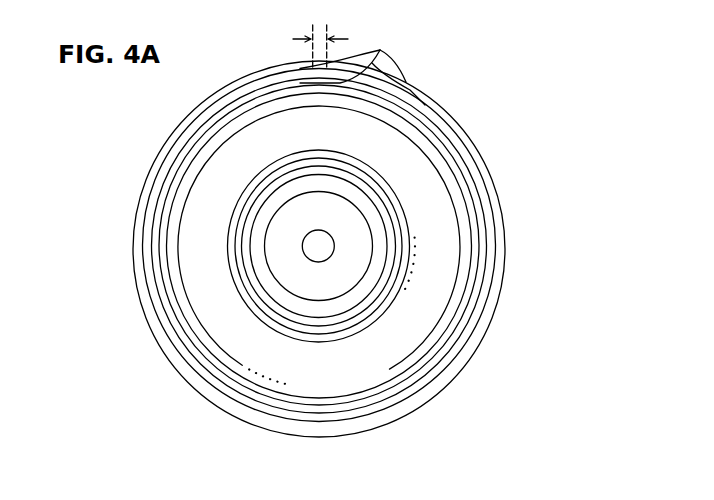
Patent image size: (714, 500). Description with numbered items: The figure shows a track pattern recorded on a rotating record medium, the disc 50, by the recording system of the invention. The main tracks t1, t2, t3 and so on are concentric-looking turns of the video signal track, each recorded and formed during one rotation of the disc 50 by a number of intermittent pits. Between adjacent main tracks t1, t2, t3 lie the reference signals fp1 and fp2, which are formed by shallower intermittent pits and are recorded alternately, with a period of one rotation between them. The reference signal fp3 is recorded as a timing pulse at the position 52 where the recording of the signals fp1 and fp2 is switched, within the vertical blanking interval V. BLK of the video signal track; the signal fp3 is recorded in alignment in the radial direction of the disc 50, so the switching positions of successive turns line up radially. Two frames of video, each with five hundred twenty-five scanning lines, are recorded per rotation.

The disc 50 is at (463, 130).
The position where recording of signals fp1 and fp2 is switched 52 is at (326, 28).
The first main track t1 is at (208, 103).
The second main track t2 is at (194, 125).
The third main track t3 is at (178, 175).
The reference signal fp1 is at (273, 68).
The reference signal fp2 is at (240, 95).
The reference signal fp3 is at (362, 74).